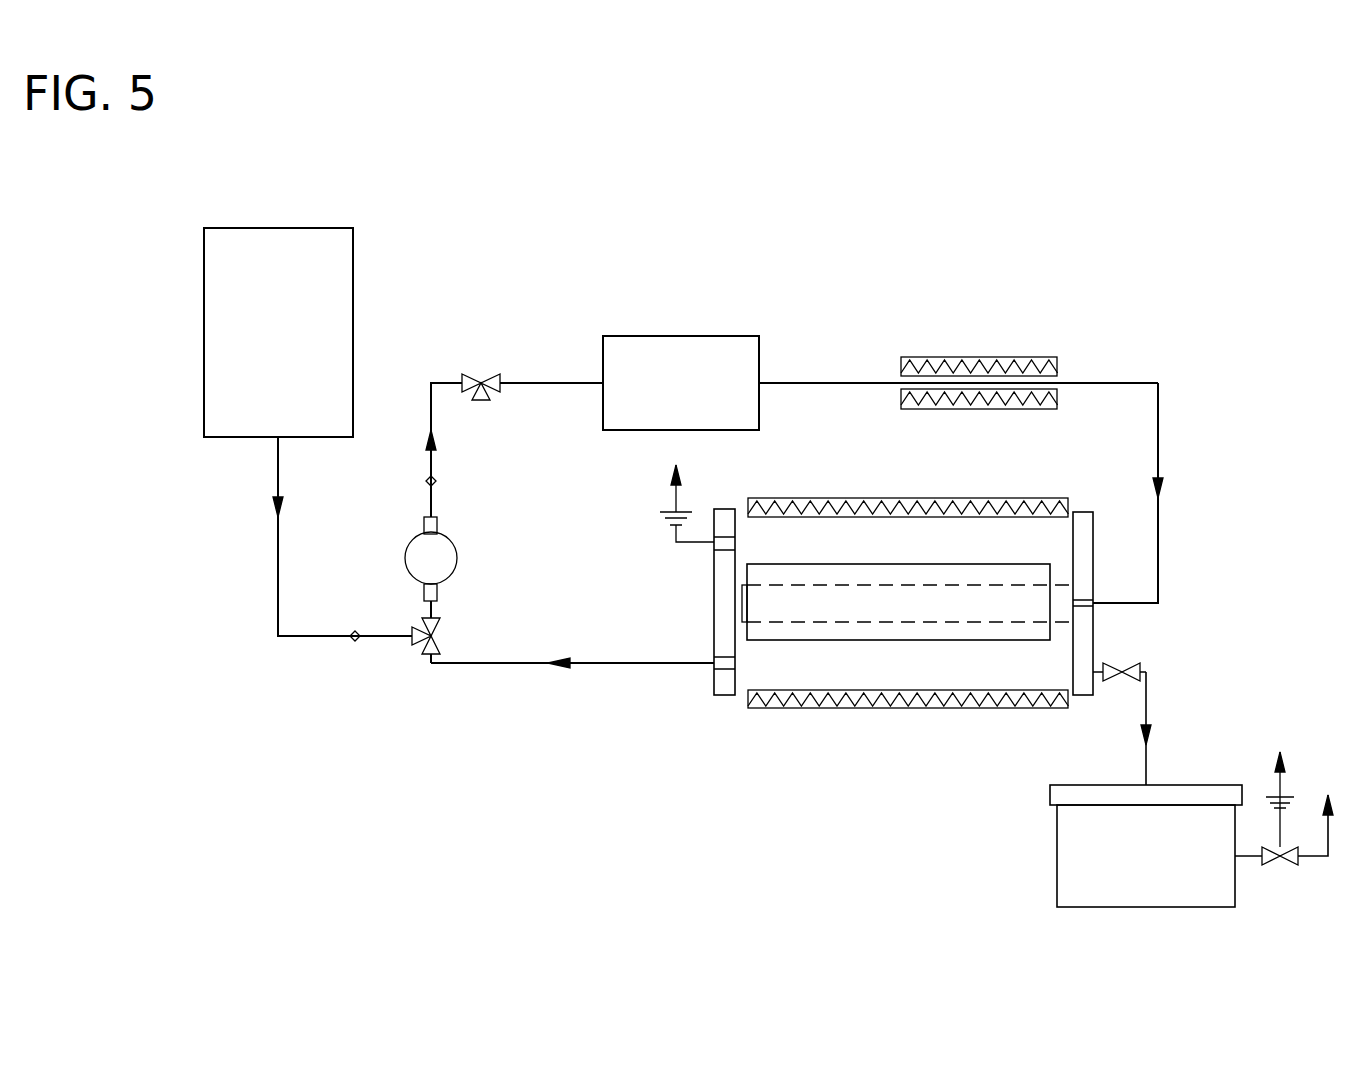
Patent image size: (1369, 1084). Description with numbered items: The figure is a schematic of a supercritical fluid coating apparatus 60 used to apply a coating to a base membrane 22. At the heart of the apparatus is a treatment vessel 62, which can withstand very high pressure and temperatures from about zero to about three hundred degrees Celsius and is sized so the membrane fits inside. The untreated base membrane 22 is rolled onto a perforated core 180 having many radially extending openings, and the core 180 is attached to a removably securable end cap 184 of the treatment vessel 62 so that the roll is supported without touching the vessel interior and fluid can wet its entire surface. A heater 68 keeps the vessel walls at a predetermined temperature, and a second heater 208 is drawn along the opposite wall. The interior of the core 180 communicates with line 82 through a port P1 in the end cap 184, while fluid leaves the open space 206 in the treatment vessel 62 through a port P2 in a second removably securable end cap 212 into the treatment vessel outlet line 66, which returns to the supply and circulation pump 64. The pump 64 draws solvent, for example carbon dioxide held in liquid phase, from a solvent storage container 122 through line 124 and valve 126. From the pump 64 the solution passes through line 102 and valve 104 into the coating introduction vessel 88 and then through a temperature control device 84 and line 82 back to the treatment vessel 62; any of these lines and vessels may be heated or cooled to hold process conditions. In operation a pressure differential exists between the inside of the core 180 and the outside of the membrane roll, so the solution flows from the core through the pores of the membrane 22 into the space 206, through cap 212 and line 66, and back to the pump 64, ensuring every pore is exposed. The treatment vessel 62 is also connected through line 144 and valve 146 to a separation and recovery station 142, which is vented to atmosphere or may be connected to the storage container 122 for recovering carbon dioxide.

The supercritical fluid coating apparatus 60 is at (1195, 395).
The solvent storage container 122 is at (353, 243).
The line 124 is at (278, 562).
The valve 126 is at (445, 636).
The supply and circulation pump 64 is at (455, 548).
The line 102 is at (431, 462).
The valve 104 is at (481, 374).
The coating introduction vessel 88 is at (662, 336).
The temperature control device 84 is at (1010, 357).
The line 82 is at (1160, 466).
The end cap 184 is at (1087, 512).
The port P1 is at (1078, 603).
The second end cap 212 is at (717, 592).
The heater 68 is at (817, 502).
The lower heater 208 is at (770, 692).
The base membrane 22 is at (832, 640).
The core 180 is at (820, 585).
The open space 206 is at (1025, 676).
The port P2 is at (738, 667).
The line 66 is at (600, 663).
The treatment vessel 62 is at (712, 695).
The valve 146 is at (1124, 682).
The line 144 is at (1147, 706).
The separation and recovery station 142 is at (1170, 864).